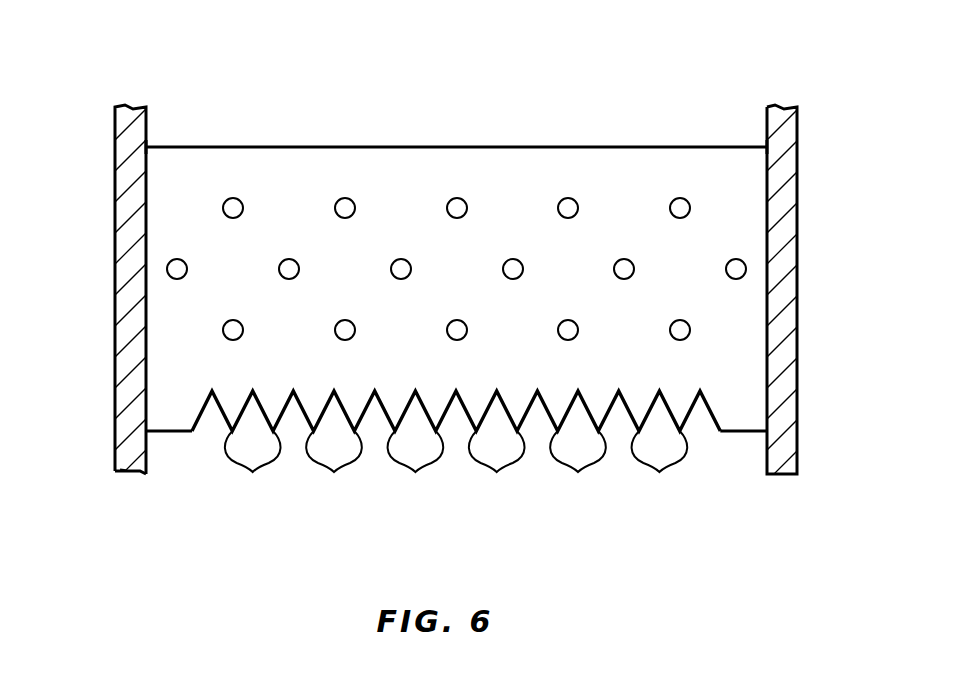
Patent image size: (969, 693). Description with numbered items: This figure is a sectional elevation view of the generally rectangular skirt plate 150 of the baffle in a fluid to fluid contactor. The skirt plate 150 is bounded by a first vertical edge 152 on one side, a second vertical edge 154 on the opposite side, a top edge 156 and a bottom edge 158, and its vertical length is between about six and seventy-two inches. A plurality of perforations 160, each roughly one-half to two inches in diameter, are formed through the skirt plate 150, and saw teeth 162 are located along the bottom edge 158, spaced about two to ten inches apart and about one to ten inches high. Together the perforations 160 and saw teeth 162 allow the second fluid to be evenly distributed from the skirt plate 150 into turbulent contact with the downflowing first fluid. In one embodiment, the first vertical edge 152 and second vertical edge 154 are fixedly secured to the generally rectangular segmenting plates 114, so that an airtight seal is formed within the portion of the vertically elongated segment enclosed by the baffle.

The segmenting plate 114 is at (115, 190).
The skirt plate 150 is at (372, 200).
The first vertical edge 152 is at (146, 180).
The second vertical edge 154 is at (767, 182).
The top edge 156 is at (696, 147).
The bottom edge 158 is at (740, 435).
The perforations 160 is at (240, 198).
The saw teeth 162 is at (456, 448).